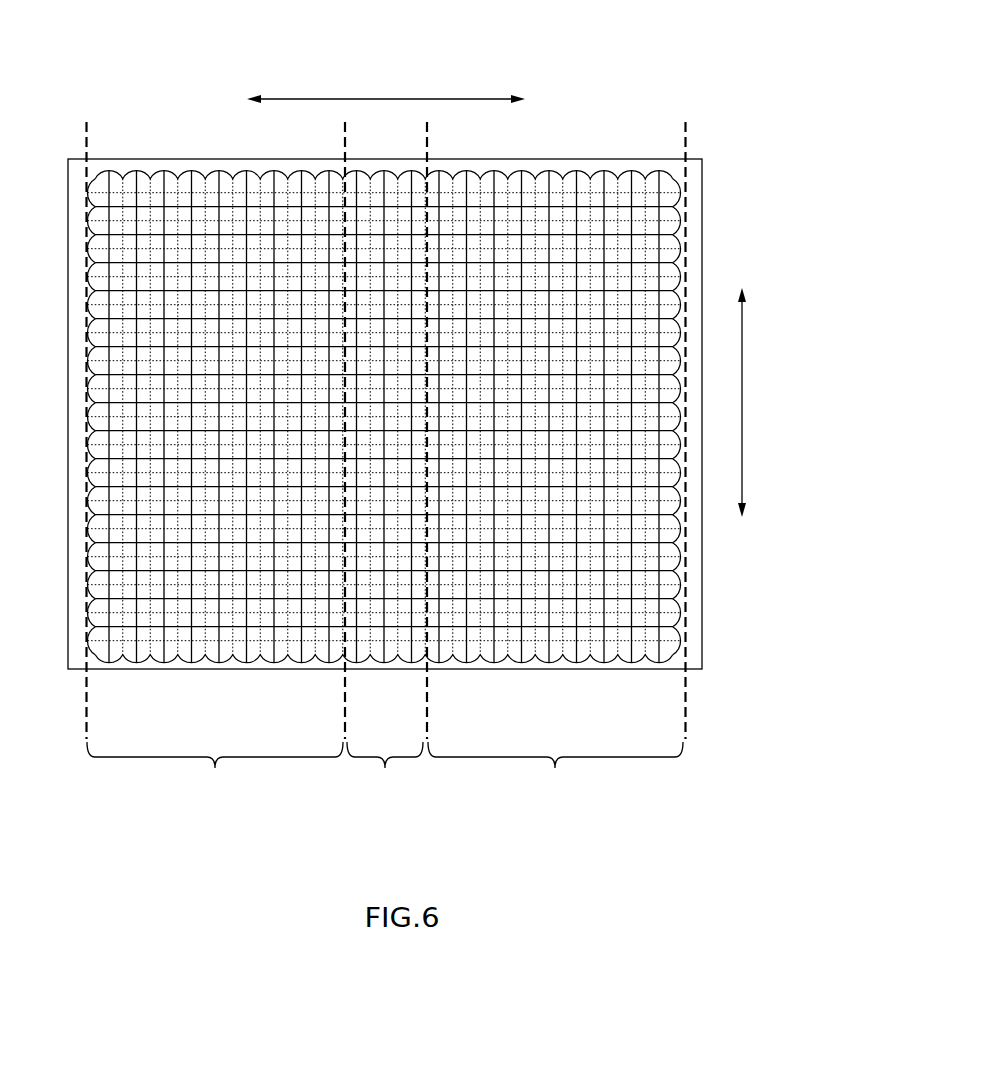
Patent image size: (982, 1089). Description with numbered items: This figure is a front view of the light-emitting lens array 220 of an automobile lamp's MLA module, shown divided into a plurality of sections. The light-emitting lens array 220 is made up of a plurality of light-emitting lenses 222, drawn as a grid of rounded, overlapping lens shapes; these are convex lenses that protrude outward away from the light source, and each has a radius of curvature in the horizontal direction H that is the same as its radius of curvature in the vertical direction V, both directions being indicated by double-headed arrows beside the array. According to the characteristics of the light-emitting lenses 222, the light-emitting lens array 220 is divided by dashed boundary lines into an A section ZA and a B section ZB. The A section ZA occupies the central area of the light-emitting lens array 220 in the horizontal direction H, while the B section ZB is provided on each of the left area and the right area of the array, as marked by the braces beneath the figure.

The light-emitting lens array 220 is at (661, 33).
The light-emitting lenses 222 is at (583, 215).
The horizontal direction H is at (383, 99).
The vertical direction V is at (743, 402).
The A section ZA is at (385, 773).
The B section ZB is at (385, 773).